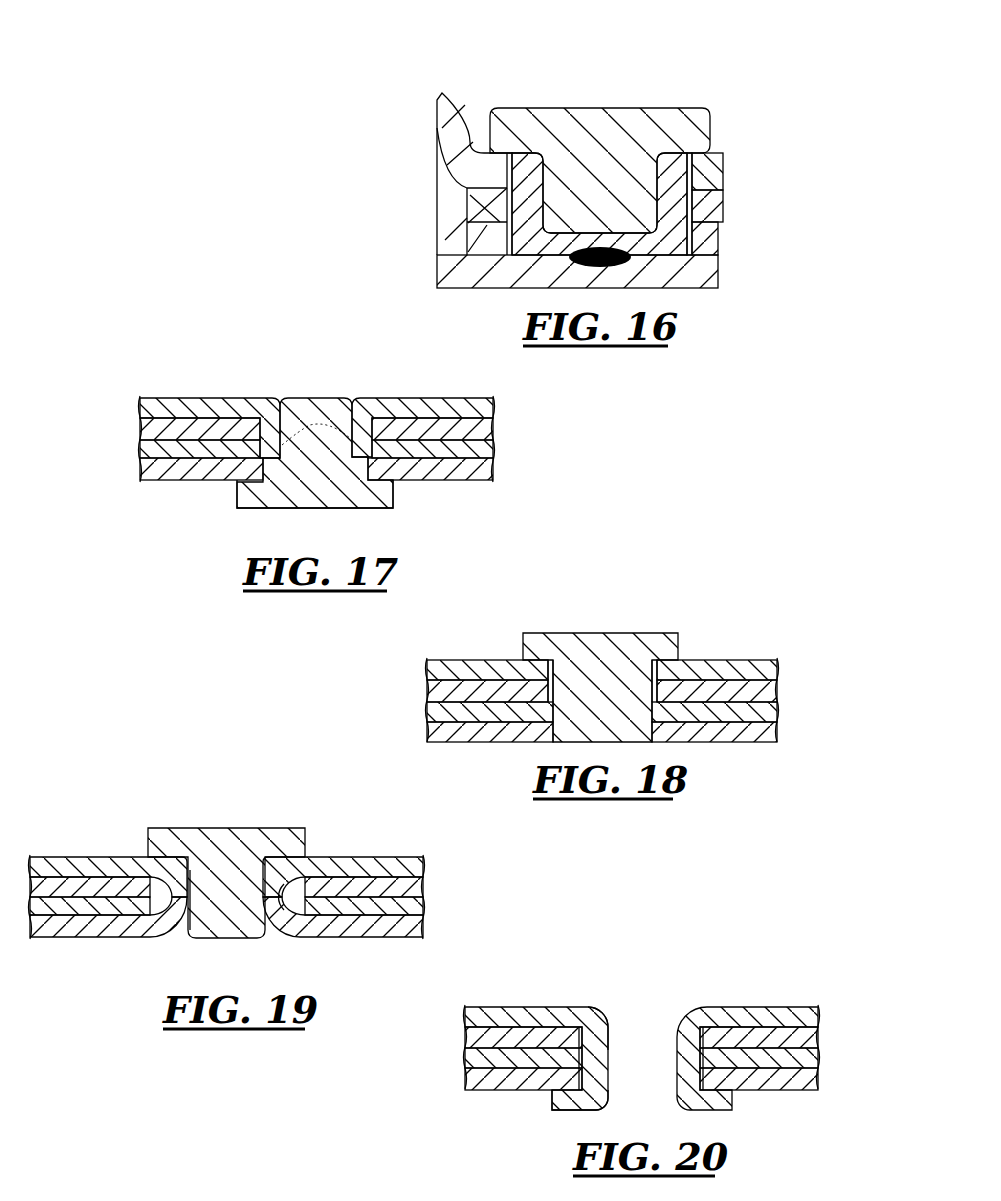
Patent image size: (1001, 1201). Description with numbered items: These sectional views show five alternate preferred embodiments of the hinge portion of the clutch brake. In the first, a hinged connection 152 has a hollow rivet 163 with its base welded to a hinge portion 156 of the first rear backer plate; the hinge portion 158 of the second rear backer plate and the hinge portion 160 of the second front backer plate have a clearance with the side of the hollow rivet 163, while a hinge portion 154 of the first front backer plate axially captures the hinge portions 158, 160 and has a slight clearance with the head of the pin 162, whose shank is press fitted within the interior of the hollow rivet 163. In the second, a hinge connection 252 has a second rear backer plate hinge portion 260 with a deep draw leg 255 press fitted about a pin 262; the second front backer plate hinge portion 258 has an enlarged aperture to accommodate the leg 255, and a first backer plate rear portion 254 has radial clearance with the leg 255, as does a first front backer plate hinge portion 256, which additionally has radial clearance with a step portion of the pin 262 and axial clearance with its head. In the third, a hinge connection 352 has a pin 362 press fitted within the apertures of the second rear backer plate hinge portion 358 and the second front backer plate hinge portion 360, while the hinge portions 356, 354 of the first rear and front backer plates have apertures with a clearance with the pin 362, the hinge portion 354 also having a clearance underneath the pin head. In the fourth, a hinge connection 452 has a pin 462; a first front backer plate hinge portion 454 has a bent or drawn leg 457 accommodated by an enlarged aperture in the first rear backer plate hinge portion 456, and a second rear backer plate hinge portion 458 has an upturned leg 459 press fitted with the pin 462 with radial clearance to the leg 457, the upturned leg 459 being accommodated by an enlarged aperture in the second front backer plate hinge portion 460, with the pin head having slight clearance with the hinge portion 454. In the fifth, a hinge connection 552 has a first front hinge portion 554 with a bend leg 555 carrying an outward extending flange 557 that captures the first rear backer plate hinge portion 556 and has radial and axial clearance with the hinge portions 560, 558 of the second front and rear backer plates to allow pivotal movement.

In FIG. 16, the hinged connection 152 is at (634, 162).
In FIG. 16, the hinge portion of the first front backer plate 154 is at (723, 168).
In FIG. 16, the hinge portion of the first rear backer plate 156 is at (719, 278).
In FIG. 16, the hinge portion of the second rear backer plate 158 is at (719, 243).
In FIG. 16, the hinge portion of the second front backer plate 160 is at (719, 208).
In FIG. 16, the pin 162 is at (708, 125).
In FIG. 16, the hollow rivet 163 is at (691, 237).
In FIG. 17, the hinge connection 252 is at (273, 410).
In FIG. 17, the first backer plate rear portion 254 is at (150, 445).
In FIG. 17, the deep draw leg 255 is at (297, 415).
In FIG. 17, the first front backer plate hinge portion 256 is at (148, 468).
In FIG. 17, the second front backer plate hinge portion 258 is at (150, 432).
In FIG. 17, the second rear backer plate hinge portion 260 is at (146, 410).
In FIG. 17, the pin 262 is at (315, 497).
In FIG. 18, the hinge connection 352 is at (649, 650).
In FIG. 18, the first front backer plate hinge portion 354 is at (776, 672).
In FIG. 18, the first rear backer plate hinge portion 356 is at (773, 692).
In FIG. 18, the second rear backer plate hinge portion 358 is at (773, 733).
In FIG. 18, the second front backer plate hinge portion 360 is at (773, 714).
In FIG. 18, the pin 362 is at (679, 648).
In FIG. 19, the hinge connection 452 is at (264, 865).
In FIG. 19, the first front backer plate hinge portion 454 is at (419, 866).
In FIG. 19, the first rear backer plate hinge portion 456 is at (419, 888).
In FIG. 19, the bent or drawn leg 457 is at (300, 888).
In FIG. 19, the second rear backer plate hinge portion 458 is at (419, 925).
In FIG. 19, the upturned leg 459 is at (263, 890).
In FIG. 19, the second front backer plate hinge portion 460 is at (419, 908).
In FIG. 19, the pin 462 is at (299, 845).
In FIG. 20, the hinge connection 552 is at (647, 1029).
In FIG. 20, the first front hinge portion 554 is at (472, 1018).
In FIG. 20, the bend leg 555 is at (609, 1044).
In FIG. 20, the first rear backer plate hinge portion 556 is at (813, 1040).
In FIG. 20, the outward extending flange 557 is at (578, 1110).
In FIG. 20, the second rear backer plate hinge portion 558 is at (813, 1082).
In FIG. 20, the second front backer plate hinge portion 560 is at (813, 1060).